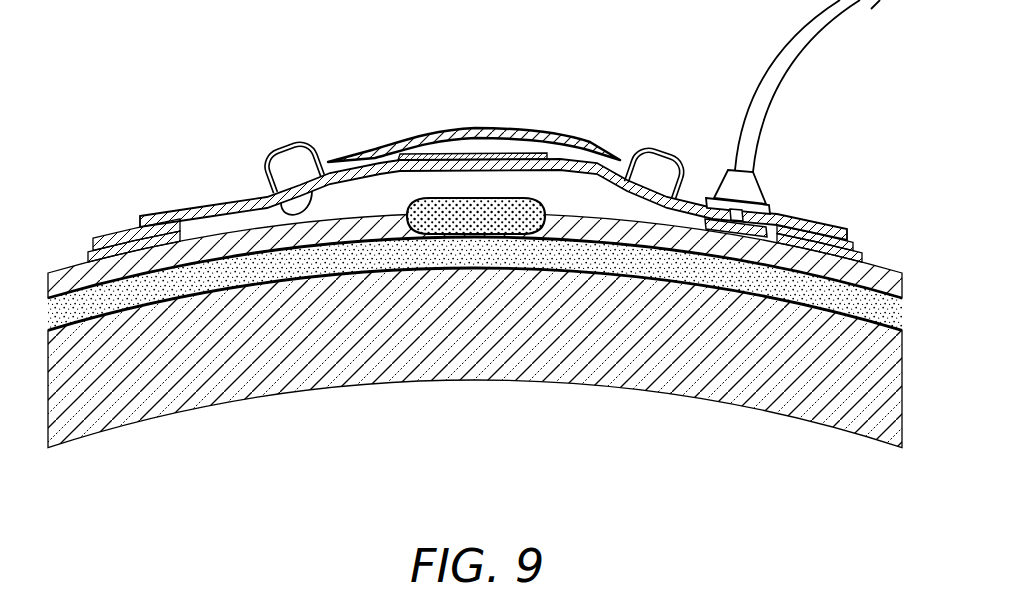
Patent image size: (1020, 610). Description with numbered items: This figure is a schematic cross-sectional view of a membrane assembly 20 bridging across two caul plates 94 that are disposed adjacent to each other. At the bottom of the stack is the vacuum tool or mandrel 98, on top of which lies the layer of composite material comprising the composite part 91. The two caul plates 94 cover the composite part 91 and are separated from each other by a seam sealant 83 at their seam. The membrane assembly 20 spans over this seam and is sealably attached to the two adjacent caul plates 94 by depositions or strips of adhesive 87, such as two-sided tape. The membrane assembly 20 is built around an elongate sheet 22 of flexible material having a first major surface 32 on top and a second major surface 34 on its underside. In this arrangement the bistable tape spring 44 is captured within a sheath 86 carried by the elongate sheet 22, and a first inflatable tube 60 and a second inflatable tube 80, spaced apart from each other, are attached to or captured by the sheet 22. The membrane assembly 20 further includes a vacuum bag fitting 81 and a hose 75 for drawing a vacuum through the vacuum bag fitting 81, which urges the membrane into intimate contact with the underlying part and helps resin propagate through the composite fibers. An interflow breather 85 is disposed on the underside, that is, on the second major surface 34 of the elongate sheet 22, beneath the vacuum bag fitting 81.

The membrane assembly 20 is at (134, 88).
The elongate sheet 22 is at (493, 194).
The first major surface 32 is at (203, 210).
The second major surface 34 is at (278, 200).
The bistable tape spring 44 is at (470, 157).
The first inflatable tube 60 is at (290, 143).
The hose 75 is at (782, 72).
The second inflatable tube 80 is at (668, 148).
The vacuum bag fitting 81 is at (750, 193).
The seam sealant 83 is at (452, 217).
The interflow breather 85 is at (717, 217).
The sheath 86 is at (495, 128).
The adhesive 87 is at (143, 243).
The composite part 91 is at (567, 258).
The caul plates 94 is at (73, 280).
The vacuum tool or mandrel 98 is at (190, 378).